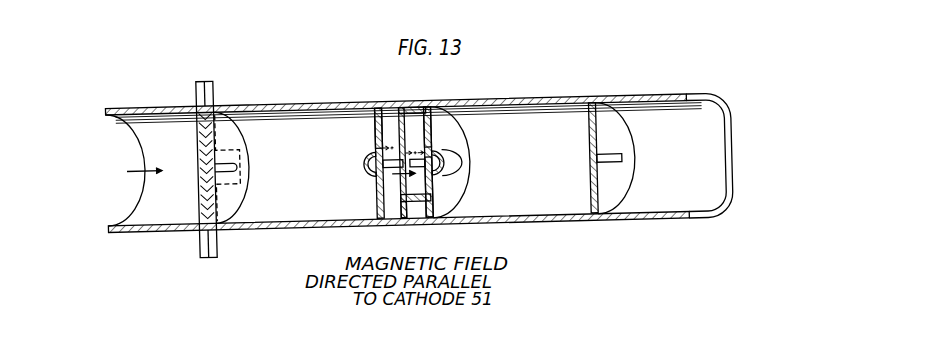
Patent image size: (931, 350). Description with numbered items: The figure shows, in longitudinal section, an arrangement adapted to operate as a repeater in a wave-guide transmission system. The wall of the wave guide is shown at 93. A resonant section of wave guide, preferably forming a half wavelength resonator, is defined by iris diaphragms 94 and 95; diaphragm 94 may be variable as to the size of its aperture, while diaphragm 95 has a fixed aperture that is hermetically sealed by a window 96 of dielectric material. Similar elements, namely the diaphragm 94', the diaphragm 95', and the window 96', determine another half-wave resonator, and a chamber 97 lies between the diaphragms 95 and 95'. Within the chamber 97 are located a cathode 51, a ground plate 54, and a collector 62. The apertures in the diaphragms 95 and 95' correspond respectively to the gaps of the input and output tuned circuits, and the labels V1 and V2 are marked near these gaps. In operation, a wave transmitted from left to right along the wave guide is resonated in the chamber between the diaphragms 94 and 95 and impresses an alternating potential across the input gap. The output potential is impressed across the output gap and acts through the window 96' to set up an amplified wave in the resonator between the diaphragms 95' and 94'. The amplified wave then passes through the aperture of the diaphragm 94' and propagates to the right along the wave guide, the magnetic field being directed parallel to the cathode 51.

The wave guide wall 93 is at (293, 103).
The iris diaphragm 94 is at (206, 168).
The iris diaphragm 94' is at (594, 158).
The iris diaphragm 95 is at (373, 163).
The iris diaphragm 95' is at (458, 162).
The window 96 is at (353, 159).
The window 96' is at (447, 150).
The chamber 97 is at (410, 112).
The cathode 51 is at (400, 138).
The ground plate 54 is at (402, 189).
The collector 62 is at (406, 209).
The voltage V1 is at (377, 127).
The voltage V2 is at (433, 127).